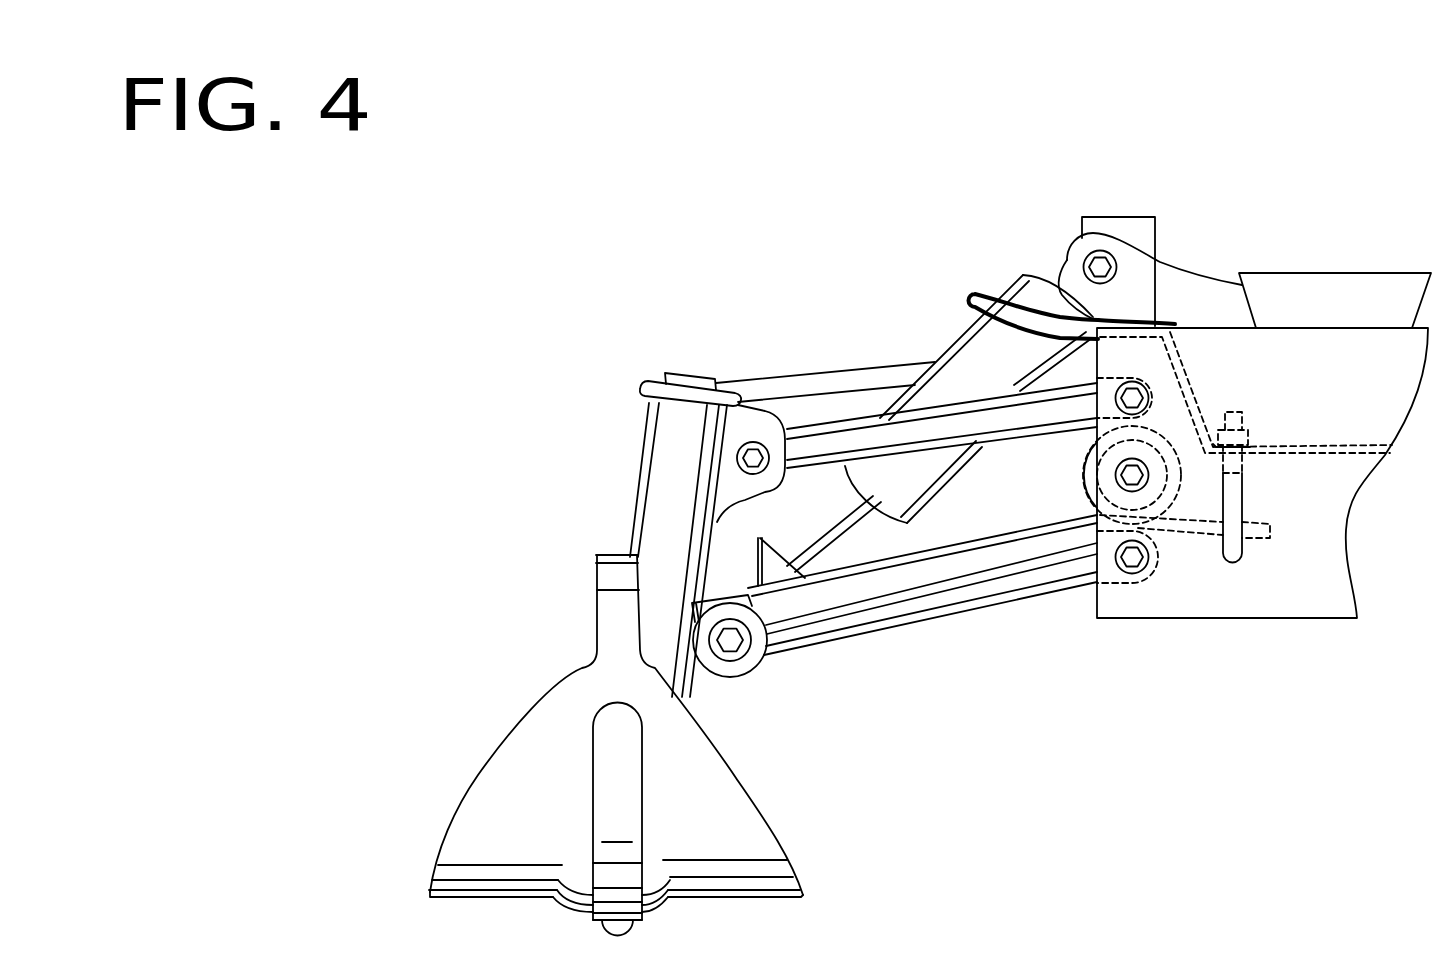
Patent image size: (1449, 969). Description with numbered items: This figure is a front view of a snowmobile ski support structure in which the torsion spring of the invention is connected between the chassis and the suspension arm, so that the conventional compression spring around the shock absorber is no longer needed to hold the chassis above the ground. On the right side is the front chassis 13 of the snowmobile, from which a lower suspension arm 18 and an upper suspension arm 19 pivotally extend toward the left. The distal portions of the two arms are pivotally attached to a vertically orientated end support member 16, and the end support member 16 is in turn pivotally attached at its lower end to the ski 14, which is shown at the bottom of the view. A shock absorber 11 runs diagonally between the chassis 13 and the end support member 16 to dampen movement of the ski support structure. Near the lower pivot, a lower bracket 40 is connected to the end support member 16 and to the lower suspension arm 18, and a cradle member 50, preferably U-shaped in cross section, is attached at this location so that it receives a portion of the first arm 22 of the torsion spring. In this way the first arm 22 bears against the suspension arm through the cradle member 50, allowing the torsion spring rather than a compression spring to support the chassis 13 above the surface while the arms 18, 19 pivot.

The shock absorber 11 is at (973, 348).
The chassis 13 is at (1313, 597).
The ski 14 is at (503, 802).
The end support member 16 is at (668, 462).
The lower suspension arm 18 is at (1078, 565).
The upper suspension arm 19 is at (815, 450).
The first arm 22 is at (947, 560).
The lower bracket 40 is at (732, 668).
The cradle member 50 is at (765, 660).